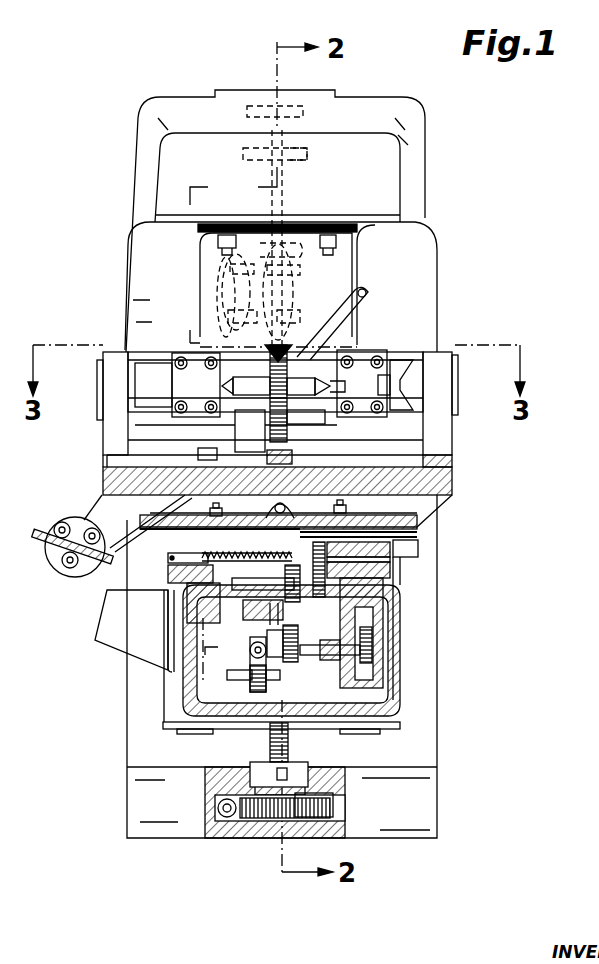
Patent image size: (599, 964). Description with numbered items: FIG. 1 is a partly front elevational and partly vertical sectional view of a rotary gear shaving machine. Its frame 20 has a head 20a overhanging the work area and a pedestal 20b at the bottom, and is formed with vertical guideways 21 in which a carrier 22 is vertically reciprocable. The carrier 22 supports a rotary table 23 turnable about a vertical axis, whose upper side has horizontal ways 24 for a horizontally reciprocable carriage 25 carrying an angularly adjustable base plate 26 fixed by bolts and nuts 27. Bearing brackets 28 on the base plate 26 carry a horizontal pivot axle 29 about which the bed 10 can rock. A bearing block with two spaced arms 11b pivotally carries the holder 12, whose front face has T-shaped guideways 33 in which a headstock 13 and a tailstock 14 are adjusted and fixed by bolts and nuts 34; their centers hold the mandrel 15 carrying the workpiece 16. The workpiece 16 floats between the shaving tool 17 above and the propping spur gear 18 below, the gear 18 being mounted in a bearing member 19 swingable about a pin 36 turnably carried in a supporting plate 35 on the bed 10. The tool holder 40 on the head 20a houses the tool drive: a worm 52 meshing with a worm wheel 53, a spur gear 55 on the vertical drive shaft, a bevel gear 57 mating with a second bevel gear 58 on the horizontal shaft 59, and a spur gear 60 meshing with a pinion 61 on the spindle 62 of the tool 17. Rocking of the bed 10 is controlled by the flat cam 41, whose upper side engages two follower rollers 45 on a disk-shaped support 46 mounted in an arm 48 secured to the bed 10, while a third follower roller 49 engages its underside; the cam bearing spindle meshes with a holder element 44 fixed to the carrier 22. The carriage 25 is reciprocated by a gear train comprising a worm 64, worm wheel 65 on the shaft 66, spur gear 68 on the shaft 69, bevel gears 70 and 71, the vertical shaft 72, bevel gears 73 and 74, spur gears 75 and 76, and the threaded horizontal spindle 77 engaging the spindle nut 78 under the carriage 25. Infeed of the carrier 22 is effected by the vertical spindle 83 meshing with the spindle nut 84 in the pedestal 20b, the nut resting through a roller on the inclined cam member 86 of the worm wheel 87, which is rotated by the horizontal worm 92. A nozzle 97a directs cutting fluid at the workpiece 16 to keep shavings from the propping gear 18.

The worktable or bed 10 is at (445, 480).
The arms or brackets 11b is at (112, 442).
The holder 12 is at (146, 352).
The headstock 13 is at (190, 352).
The tailstock 14 is at (370, 352).
The mandrel 15 is at (310, 396).
The workpiece or blank 16 is at (270, 385).
The gear-type shaving cutter or tool 17 is at (288, 302).
The spur gear (propping gear) 18 is at (283, 434).
The bearing member 19 is at (235, 437).
The main supporting means or frame 20 is at (438, 650).
The head of the frame 20a is at (413, 172).
The pedestal of the frame 20b is at (430, 808).
The vertical guideways 21 is at (372, 734).
The console or carrier 22 is at (392, 710).
The rotary table 23 is at (400, 615).
The horizontal ways 24 is at (418, 548).
The carriage 25 is at (420, 530).
The base plate 26 is at (388, 514).
The bolts and nuts 27 is at (346, 507).
The bearing brackets 28 is at (268, 510).
The horizontal pivot axle 29 is at (294, 486).
The T-shaped grooves or guideways 33 is at (153, 385).
The bolts and nuts 34 is at (279, 383).
The supporting plate 35 is at (202, 455).
The pin 36 is at (268, 457).
The holder (tool holder) 40 is at (205, 273).
The flat cam or guide means 41 is at (38, 542).
The holder element 44 is at (107, 620).
The follower rollers 45 is at (58, 522).
The disk-shaped support 46 is at (60, 525).
The arm 48 is at (100, 496).
The third follower roller 49 is at (69, 570).
The horizontal worm 52 is at (240, 150).
The worm wheel 53 is at (305, 158).
The second spur gear 55 is at (303, 112).
The bevel gear 57 is at (292, 250).
The second bevel gear 58 is at (284, 270).
The horizontal shaft 59 is at (255, 263).
The spur gear 60 is at (222, 262).
The pinion 61 is at (226, 316).
The horizontal spindle 62 is at (322, 336).
The worm 64 is at (262, 655).
The worm wheel 65 is at (272, 681).
The horizontal shaft 66 is at (238, 680).
The spur gear 68 is at (375, 652).
The shaft 69 is at (355, 655).
The bevel gear 70 is at (330, 656).
The second bevel gear 71 is at (248, 650).
The vertical shaft 72 is at (270, 630).
The third bevel gear 73 is at (270, 588).
The fourth bevel gear 74 is at (290, 580).
The spur gear 75 is at (358, 615).
The spur gear 76 is at (318, 540).
The horizontal spindle 77 is at (168, 560).
The spindle nut 78 is at (204, 552).
The vertical spindle 83 is at (290, 748).
The spindle nut 84 is at (265, 770).
The cam member 86 is at (305, 775).
The worm wheel 87 is at (343, 812).
The horizontal worm 92 is at (220, 808).
The nozzle 97a is at (368, 293).